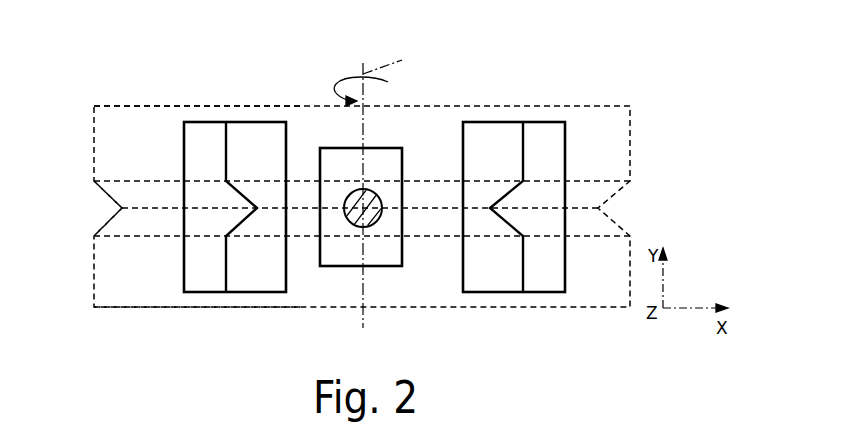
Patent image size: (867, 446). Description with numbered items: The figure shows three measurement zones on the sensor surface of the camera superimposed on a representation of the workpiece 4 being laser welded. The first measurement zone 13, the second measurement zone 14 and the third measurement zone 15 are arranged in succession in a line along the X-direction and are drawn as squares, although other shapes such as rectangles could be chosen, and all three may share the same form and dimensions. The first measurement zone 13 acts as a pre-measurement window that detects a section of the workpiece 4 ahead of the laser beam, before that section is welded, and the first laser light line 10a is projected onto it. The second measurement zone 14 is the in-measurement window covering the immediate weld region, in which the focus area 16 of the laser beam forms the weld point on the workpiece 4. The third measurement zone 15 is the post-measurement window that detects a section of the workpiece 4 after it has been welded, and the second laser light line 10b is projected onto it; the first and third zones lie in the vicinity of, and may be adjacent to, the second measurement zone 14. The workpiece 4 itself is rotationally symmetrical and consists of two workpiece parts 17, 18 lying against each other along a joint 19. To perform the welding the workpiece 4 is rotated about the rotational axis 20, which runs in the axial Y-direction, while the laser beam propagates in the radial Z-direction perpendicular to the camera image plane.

The workpiece 4 is at (637, 118).
The first laser light line 10a is at (226, 150).
The second laser light line 10b is at (523, 150).
The first measurement zone 13 is at (250, 122).
The second measurement zone 14 is at (380, 148).
The third measurement zone 15 is at (498, 122).
The focus area 16 is at (355, 198).
The workpiece part 17 is at (123, 138).
The workpiece part 18 is at (122, 280).
The joint 19 is at (143, 212).
The rotational axis 20 is at (383, 63).